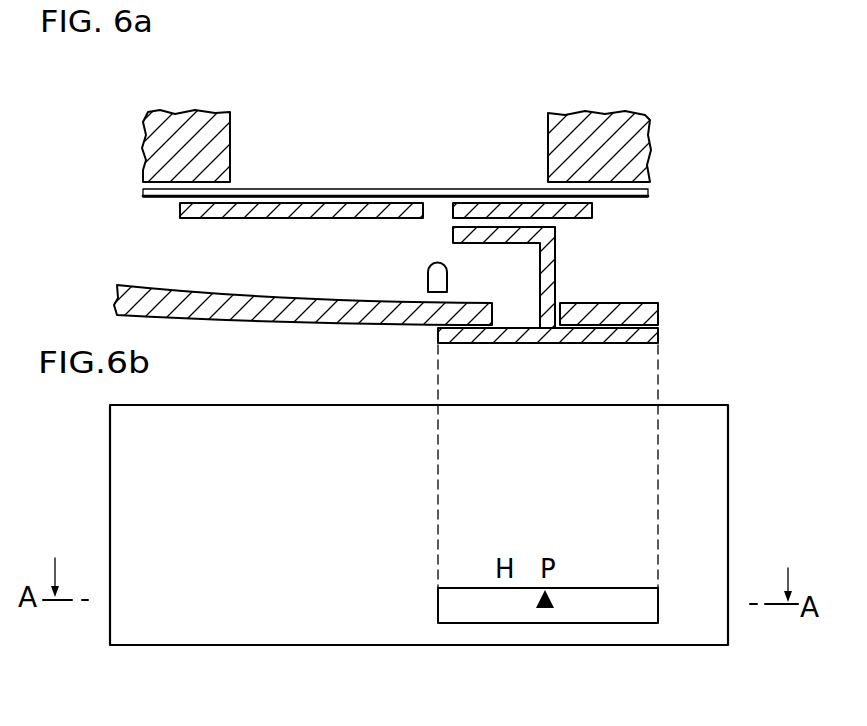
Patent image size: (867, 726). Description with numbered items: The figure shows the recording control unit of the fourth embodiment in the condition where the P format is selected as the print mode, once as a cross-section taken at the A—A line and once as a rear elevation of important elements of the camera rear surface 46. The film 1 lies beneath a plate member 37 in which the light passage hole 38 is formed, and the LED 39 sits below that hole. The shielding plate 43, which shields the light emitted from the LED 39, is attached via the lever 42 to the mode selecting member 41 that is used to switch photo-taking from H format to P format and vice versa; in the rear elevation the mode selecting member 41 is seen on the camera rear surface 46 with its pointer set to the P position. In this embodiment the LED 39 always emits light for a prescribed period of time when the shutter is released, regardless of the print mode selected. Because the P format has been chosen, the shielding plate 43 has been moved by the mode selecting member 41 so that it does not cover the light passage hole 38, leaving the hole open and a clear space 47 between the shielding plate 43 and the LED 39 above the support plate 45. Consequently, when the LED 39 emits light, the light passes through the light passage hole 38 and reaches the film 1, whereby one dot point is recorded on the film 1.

In FIG. 6A, the film 1 is at (648, 197).
In FIG. 6A, the guide plate 37 is at (592, 215).
In FIG. 6A, the light passage hole 38 is at (437, 257).
In FIG. 6A, the LED 39 is at (428, 275).
In FIG. 6A, the mode selecting member 41 is at (580, 343).
In FIG. 6B, the mode selecting member 41 is at (493, 608).
In FIG. 6A, the lever 42 is at (555, 262).
In FIG. 6A, the shielding plate 43 is at (495, 240).
In FIG. 6A, the support plate 45 is at (658, 304).
In FIG. 6B, the camera rear surface 46 is at (705, 478).
In FIG. 6A, the gap between members 47 is at (518, 308).